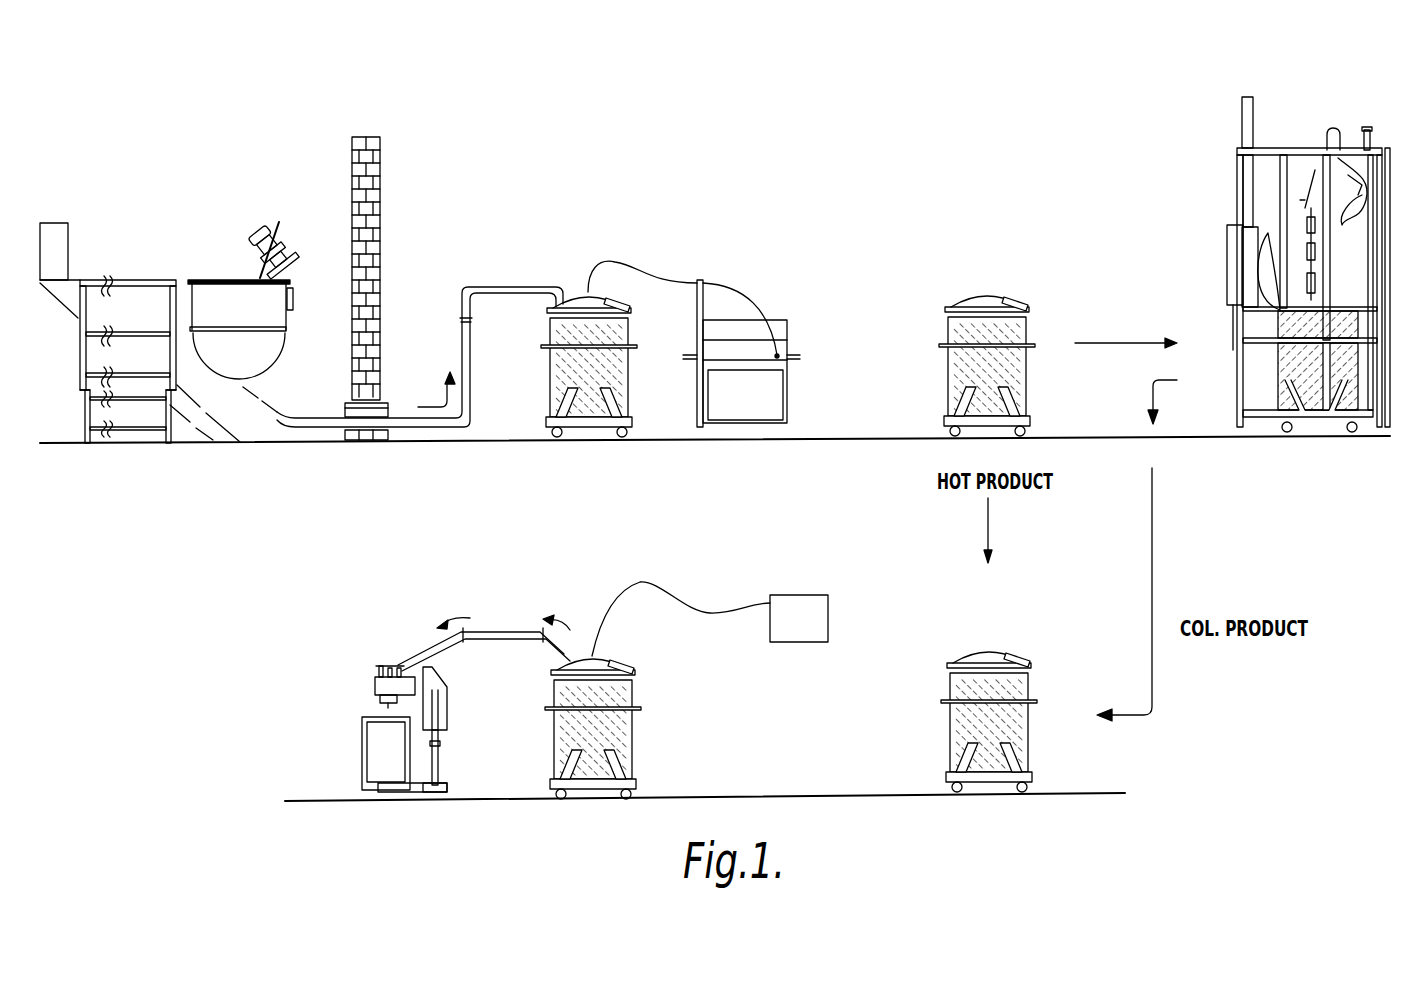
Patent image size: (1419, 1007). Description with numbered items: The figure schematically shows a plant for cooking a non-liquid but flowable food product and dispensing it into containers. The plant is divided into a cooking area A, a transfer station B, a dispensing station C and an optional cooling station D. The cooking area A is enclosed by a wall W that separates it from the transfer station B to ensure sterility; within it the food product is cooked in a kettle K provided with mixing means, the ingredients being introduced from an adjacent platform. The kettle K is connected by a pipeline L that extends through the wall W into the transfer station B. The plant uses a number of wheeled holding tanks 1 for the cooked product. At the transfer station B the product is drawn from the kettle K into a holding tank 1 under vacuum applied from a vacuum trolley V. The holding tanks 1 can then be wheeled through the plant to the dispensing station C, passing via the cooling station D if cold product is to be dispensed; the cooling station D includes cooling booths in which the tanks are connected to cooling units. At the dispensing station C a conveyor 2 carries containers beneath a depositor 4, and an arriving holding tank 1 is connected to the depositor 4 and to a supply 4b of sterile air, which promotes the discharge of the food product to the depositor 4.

The holding tank 1 is at (550, 387).
The conveyor 2 is at (378, 752).
The depositor 4 is at (404, 686).
The supply of sterile air 4b is at (818, 630).
The cooking area A is at (200, 148).
The transfer station B is at (693, 144).
The dispensing station C is at (520, 867).
The cooling station D is at (1344, 91).
The kettle K is at (244, 320).
The wall W is at (380, 196).
The vacuum trolley V is at (763, 391).
The pipeline L is at (437, 432).